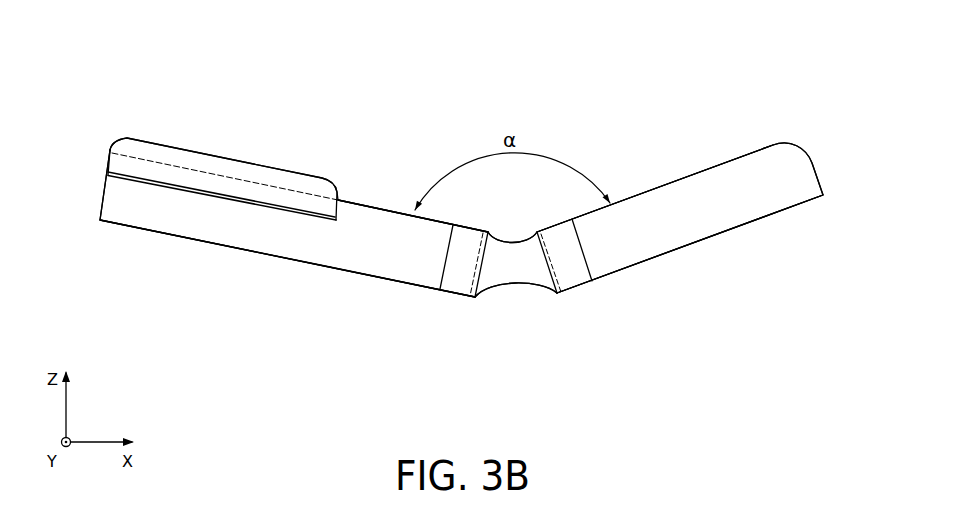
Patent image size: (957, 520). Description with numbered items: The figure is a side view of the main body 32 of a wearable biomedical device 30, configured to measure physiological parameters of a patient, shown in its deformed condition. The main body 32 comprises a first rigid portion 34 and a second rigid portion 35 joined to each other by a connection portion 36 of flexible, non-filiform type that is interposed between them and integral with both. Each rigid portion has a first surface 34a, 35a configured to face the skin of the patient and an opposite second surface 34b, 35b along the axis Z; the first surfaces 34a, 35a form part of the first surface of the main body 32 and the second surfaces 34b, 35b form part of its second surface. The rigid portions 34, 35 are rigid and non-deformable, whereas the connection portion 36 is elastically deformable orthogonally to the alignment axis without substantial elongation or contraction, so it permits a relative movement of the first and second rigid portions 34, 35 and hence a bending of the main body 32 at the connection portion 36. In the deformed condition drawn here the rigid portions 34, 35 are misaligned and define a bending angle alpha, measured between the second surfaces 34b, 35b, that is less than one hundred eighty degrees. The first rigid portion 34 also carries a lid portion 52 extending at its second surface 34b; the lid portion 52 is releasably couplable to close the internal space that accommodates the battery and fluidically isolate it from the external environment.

The biomedical device 30 is at (158, 108).
The lid portion 52 is at (207, 160).
The main body 32 is at (170, 233).
The first rigid portion 34 is at (285, 243).
The first surface of the first rigid portion 34a is at (352, 273).
The second surface of the first rigid portion 34b is at (375, 202).
The connection portion 36 is at (515, 275).
The second rigid portion 35 is at (728, 213).
The first surface of the second rigid portion 35a is at (678, 250).
The second surface of the second rigid portion 35b is at (693, 173).